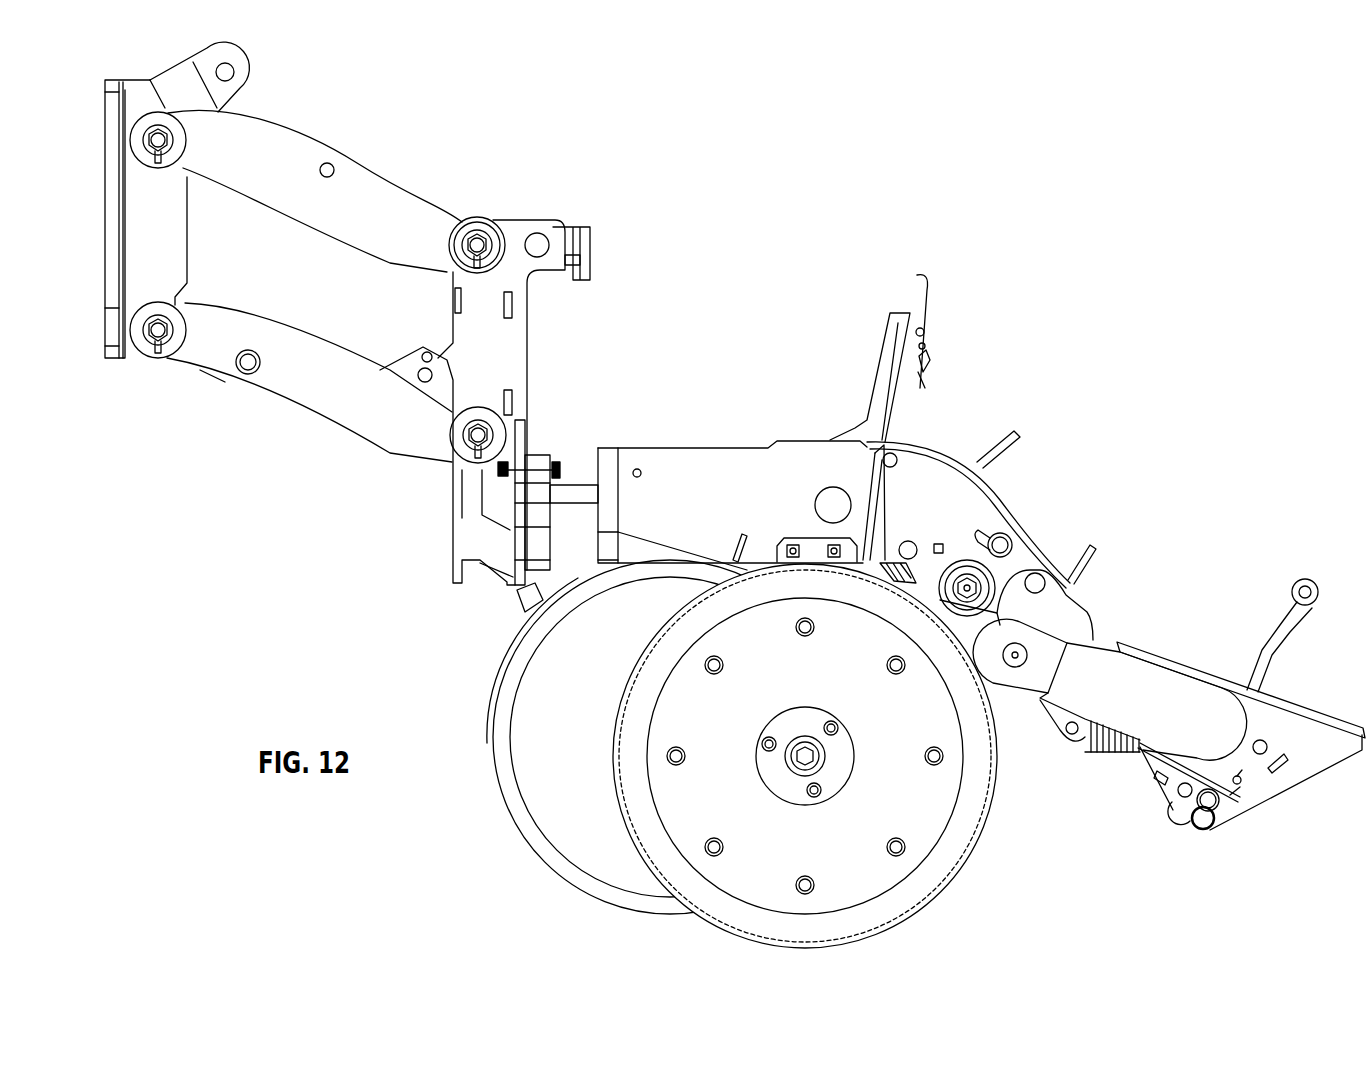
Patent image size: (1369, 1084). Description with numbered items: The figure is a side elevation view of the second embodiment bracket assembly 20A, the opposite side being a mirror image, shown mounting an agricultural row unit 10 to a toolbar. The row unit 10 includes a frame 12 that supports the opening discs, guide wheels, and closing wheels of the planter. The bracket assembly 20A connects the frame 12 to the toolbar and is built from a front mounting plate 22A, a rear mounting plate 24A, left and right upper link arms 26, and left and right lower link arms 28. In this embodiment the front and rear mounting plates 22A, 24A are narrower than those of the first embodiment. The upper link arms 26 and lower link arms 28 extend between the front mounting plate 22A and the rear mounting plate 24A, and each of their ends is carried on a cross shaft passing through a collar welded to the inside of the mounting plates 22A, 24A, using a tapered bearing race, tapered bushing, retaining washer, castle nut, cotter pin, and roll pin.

The row unit 10 is at (721, 280).
The frame 12 is at (940, 446).
The bracket assembly 20A is at (554, 105).
The front mounting plate 22A is at (118, 228).
The rear mounting plate 24A is at (508, 350).
The upper link arm 26 is at (378, 198).
The lower link arm 28 is at (315, 410).